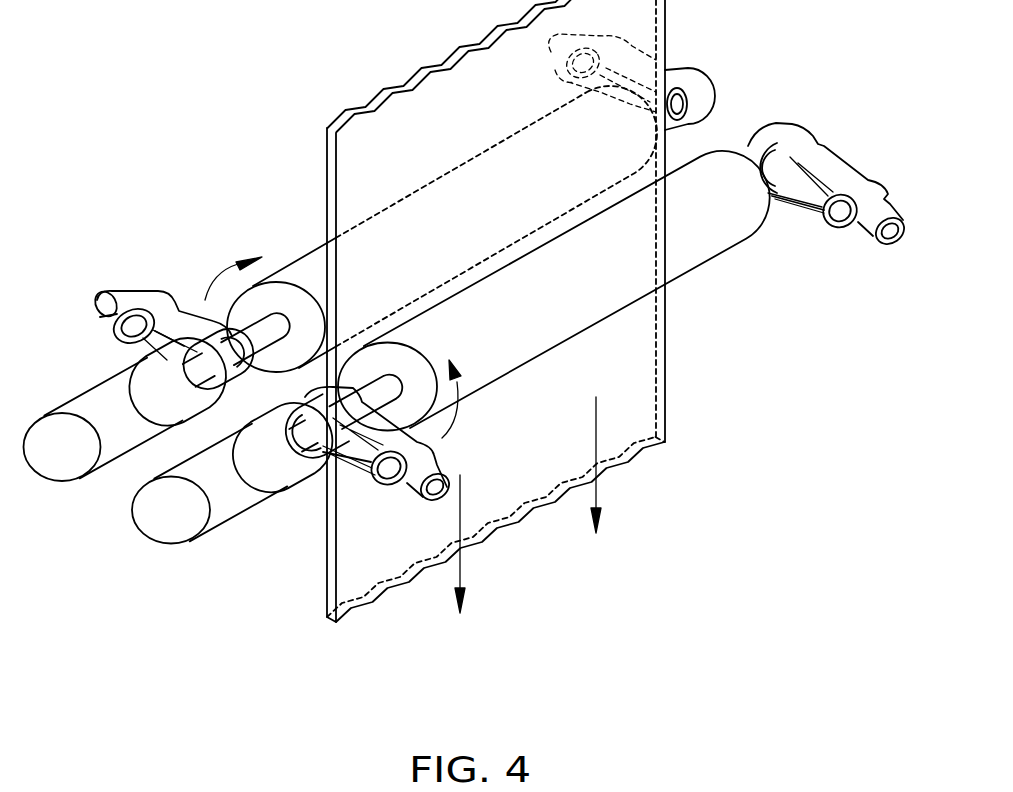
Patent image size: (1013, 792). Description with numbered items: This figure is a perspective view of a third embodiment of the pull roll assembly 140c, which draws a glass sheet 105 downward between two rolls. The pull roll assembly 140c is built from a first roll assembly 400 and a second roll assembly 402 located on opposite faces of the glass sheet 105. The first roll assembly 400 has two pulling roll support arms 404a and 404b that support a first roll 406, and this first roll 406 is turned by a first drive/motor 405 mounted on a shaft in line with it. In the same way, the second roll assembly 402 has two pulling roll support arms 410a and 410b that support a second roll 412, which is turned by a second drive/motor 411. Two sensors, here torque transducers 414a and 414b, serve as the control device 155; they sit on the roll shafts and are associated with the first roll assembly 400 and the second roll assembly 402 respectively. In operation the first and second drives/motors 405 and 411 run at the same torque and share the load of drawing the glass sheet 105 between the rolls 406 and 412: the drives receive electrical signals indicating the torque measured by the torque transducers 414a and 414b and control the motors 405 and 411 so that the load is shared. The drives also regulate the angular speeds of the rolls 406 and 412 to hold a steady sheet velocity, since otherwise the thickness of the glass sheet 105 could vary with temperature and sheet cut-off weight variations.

The glass sheet 105 is at (327, 599).
The pull roll assembly 140c is at (818, 67).
The device 155 is at (199, 370).
The first roll assembly 400 is at (826, 128).
The second roll assembly 402 is at (716, 66).
The pulling roll support arm 404a is at (380, 488).
The pulling roll support arm 404b is at (835, 228).
The first drive/motor 405 is at (152, 520).
The first roll 406 is at (706, 268).
The pulling roll support arm 410a is at (112, 326).
The pulling roll support arm 410b is at (714, 93).
The second drive/motor 411 is at (50, 466).
The second roll 412 is at (308, 250).
The torque transducer 414a is at (308, 477).
The torque transducer 414b is at (148, 364).